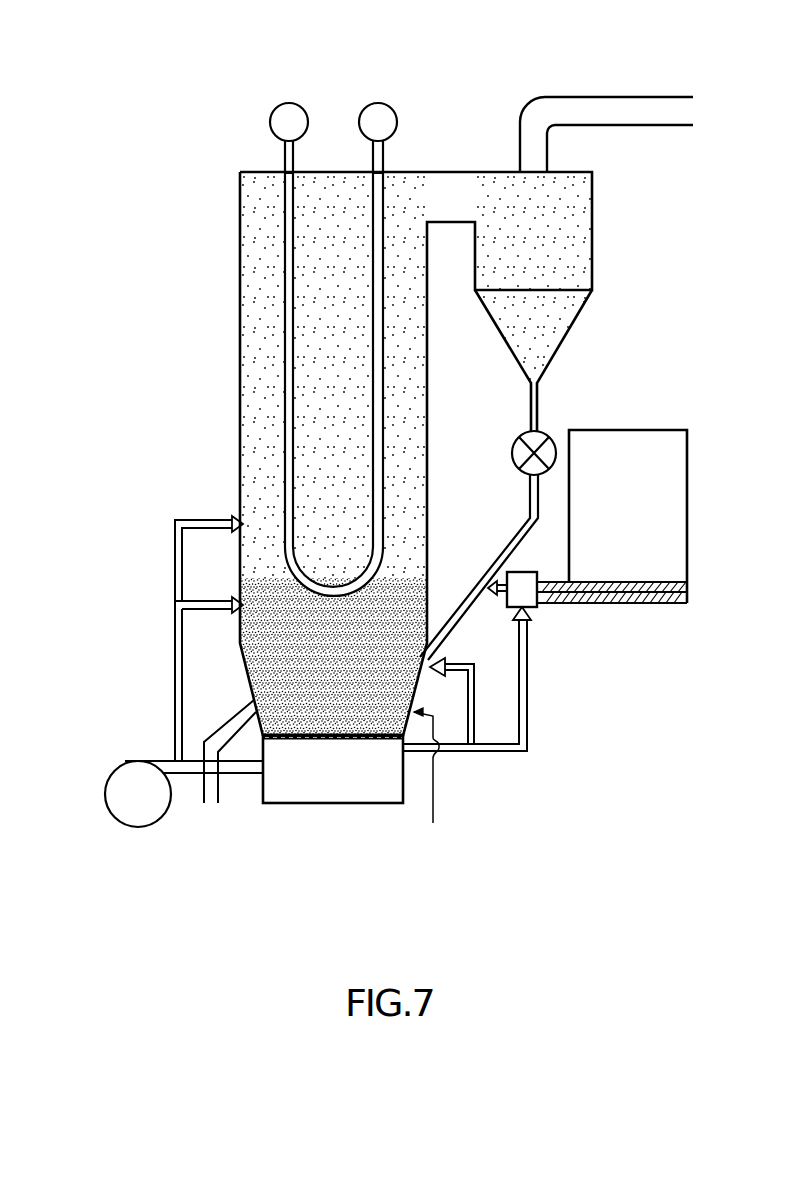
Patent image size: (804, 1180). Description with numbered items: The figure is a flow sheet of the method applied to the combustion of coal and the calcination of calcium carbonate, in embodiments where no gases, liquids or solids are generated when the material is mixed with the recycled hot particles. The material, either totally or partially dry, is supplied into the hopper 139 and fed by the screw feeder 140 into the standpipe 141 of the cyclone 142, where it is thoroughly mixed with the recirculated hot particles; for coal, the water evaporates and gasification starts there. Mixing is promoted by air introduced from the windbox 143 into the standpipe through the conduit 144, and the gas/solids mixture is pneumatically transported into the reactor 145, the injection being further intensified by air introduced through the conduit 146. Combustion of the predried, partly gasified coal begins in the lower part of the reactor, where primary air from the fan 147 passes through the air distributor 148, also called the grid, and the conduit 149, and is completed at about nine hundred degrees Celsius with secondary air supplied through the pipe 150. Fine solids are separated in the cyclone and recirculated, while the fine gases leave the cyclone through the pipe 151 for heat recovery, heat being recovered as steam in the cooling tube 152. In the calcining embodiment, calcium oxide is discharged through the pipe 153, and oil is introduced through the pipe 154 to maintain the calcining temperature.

The hopper 139 is at (635, 440).
The screw feeder 140 is at (592, 604).
The standpipe 141 is at (480, 587).
The cyclone 142 is at (592, 290).
The windbox 143 is at (362, 785).
The conduit 144 is at (520, 757).
The reactor 145 is at (240, 338).
The conduit 146 is at (478, 687).
The fan 147 is at (143, 812).
The air distributor 148 is at (257, 697).
The conduit 149 is at (250, 770).
The conduit 150 is at (175, 625).
The pipe 151 is at (611, 105).
The cooling tube 152 is at (285, 150).
The pipe 153 is at (203, 795).
The pipe 154 is at (433, 792).